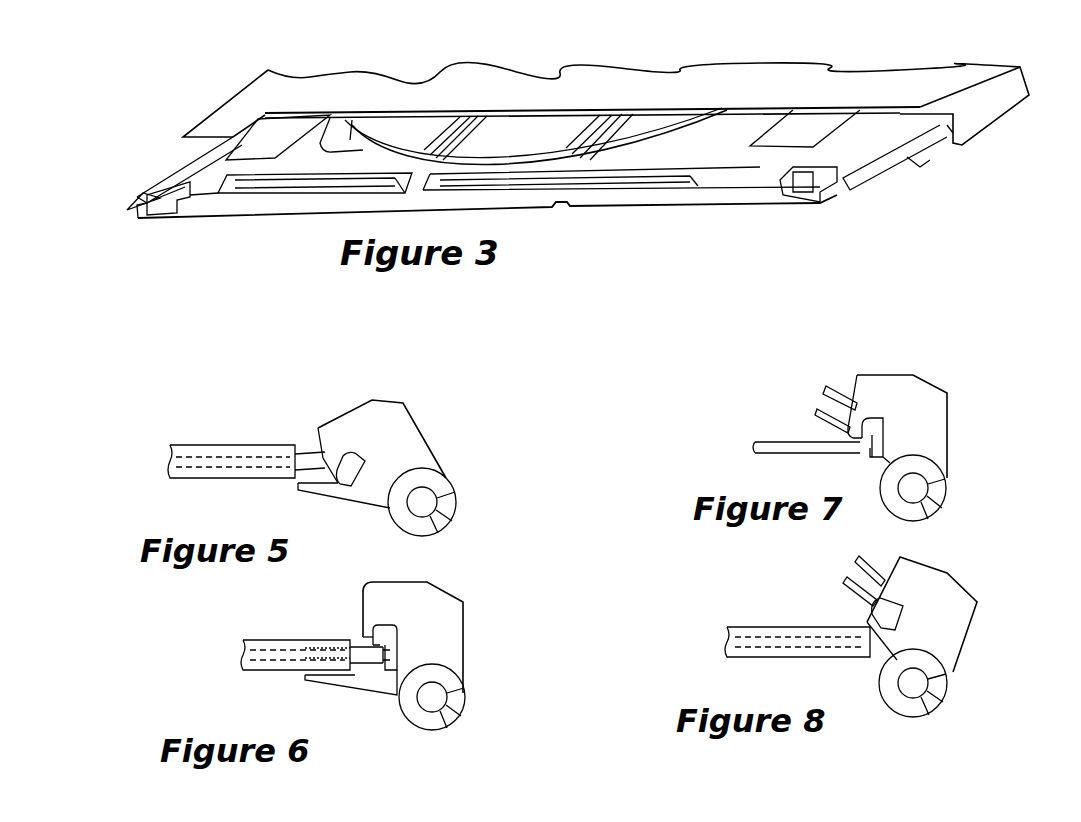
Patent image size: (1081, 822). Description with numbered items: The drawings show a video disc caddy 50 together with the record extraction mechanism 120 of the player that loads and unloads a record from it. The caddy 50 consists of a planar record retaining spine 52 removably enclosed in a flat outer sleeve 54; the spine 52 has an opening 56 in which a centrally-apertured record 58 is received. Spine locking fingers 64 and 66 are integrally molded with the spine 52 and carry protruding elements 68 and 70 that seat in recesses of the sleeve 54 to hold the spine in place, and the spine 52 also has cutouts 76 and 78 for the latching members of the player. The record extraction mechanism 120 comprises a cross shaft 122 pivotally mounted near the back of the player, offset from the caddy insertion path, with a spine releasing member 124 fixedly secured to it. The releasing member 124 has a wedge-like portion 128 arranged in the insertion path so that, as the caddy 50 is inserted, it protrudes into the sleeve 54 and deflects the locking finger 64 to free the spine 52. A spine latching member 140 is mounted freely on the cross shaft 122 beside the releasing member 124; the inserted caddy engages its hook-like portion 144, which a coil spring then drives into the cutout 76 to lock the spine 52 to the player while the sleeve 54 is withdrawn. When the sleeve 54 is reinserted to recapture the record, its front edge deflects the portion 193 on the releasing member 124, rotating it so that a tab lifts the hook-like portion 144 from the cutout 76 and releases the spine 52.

In FIG. 3, the caddy 50 is at (906, 38).
In FIG. 3, the record retaining spine 52 is at (700, 203).
In FIG. 5, the record retaining spine 52 is at (215, 478).
In FIG. 6, the record retaining spine 52 is at (273, 654).
In FIG. 7, the record retaining spine 52 is at (798, 454).
In FIG. 8, the record retaining spine 52 is at (773, 648).
In FIG. 3, the outer sleeve 54 is at (757, 68).
In FIG. 5, the outer sleeve 54 is at (203, 444).
In FIG. 6, the outer sleeve 54 is at (257, 641).
In FIG. 8, the outer sleeve 54 is at (756, 626).
In FIG. 3, the opening 56 is at (349, 132).
In FIG. 3, the record 58 is at (640, 130).
In FIG. 3, the spine locking finger 64 is at (172, 166).
In FIG. 3, the spine locking finger 66 is at (870, 177).
In FIG. 3, the protruding element 68 is at (141, 177).
In FIG. 3, the protruding element 70 is at (910, 167).
In FIG. 3, the cutout 76 is at (200, 190).
In FIG. 3, the cutout 78 is at (777, 176).
In FIG. 5, the record extraction mechanism 120 is at (475, 409).
In FIG. 6, the record extraction mechanism 120 is at (497, 639).
In FIG. 7, the record extraction mechanism 120 is at (1022, 411).
In FIG. 8, the record extraction mechanism 120 is at (1025, 657).
In FIG. 5, the cross shaft 122 is at (432, 503).
In FIG. 6, the cross shaft 122 is at (440, 698).
In FIG. 7, the cross shaft 122 is at (920, 493).
In FIG. 8, the cross shaft 122 is at (922, 689).
In FIG. 5, the spine releasing member 124 is at (447, 464).
In FIG. 6, the spine releasing member 124 is at (432, 697).
In FIG. 7, the spine releasing member 124 is at (953, 463).
In FIG. 8, the spine releasing member 124 is at (962, 666).
In FIG. 6, the wedge-like portion 128 is at (392, 673).
In FIG. 7, the wedge-like portion 128 is at (828, 392).
In FIG. 8, the wedge-like portion 128 is at (860, 563).
In FIG. 5, the spine latching member 140 is at (411, 444).
In FIG. 6, the spine latching member 140 is at (450, 606).
In FIG. 7, the spine latching member 140 is at (928, 393).
In FIG. 8, the spine latching member 140 is at (957, 603).
In FIG. 5, the hook-like portion 144 is at (345, 489).
In FIG. 6, the hook-like portion 144 is at (365, 641).
In FIG. 7, the hook-like portion 144 is at (848, 429).
In FIG. 8, the hook-like portion 144 is at (872, 612).
In FIG. 5, the portion 193 is at (327, 490).
In FIG. 6, the portion 193 is at (342, 685).
In FIG. 7, the portion 193 is at (818, 413).
In FIG. 8, the portion 193 is at (846, 581).